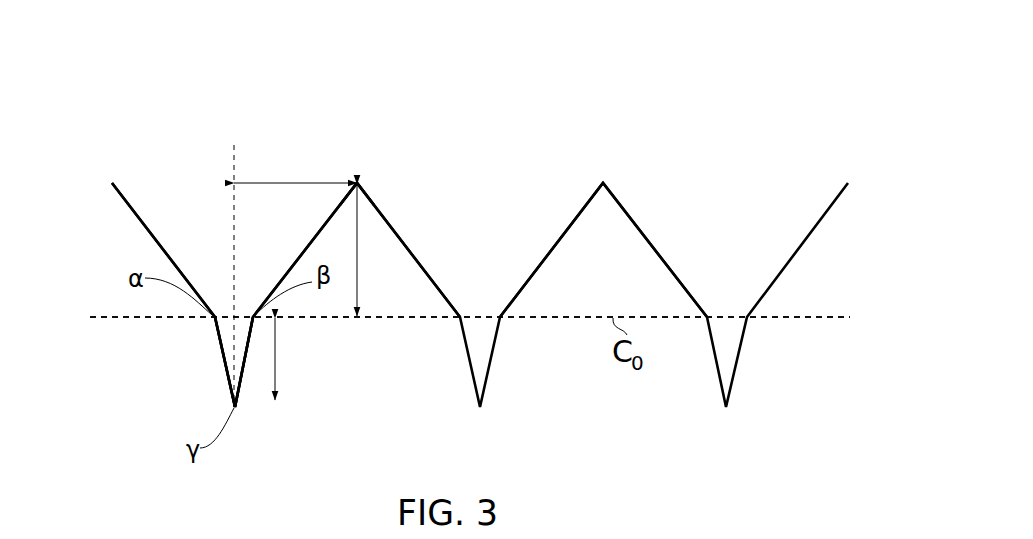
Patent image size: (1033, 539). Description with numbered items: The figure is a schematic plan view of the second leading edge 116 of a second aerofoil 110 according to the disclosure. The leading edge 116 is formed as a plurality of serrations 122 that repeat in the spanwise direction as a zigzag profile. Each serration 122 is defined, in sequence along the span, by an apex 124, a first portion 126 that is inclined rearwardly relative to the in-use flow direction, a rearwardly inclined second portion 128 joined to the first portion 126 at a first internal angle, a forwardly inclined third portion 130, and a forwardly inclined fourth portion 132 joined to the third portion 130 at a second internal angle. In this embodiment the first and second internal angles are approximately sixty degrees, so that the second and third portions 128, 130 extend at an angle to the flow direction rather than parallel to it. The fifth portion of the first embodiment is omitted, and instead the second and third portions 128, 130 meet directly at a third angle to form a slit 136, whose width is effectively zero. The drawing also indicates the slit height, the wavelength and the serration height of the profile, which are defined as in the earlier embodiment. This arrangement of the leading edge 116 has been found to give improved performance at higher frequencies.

The second aerofoil 110 is at (580, 410).
The second leading edge 116 is at (614, 72).
The serration 122 is at (428, 212).
The apex 124 is at (358, 182).
The first portion 126 is at (132, 212).
The second portion 128 is at (220, 343).
The third portion 130 is at (242, 376).
The fourth portion 132 is at (303, 302).
The slit 136 is at (221, 378).